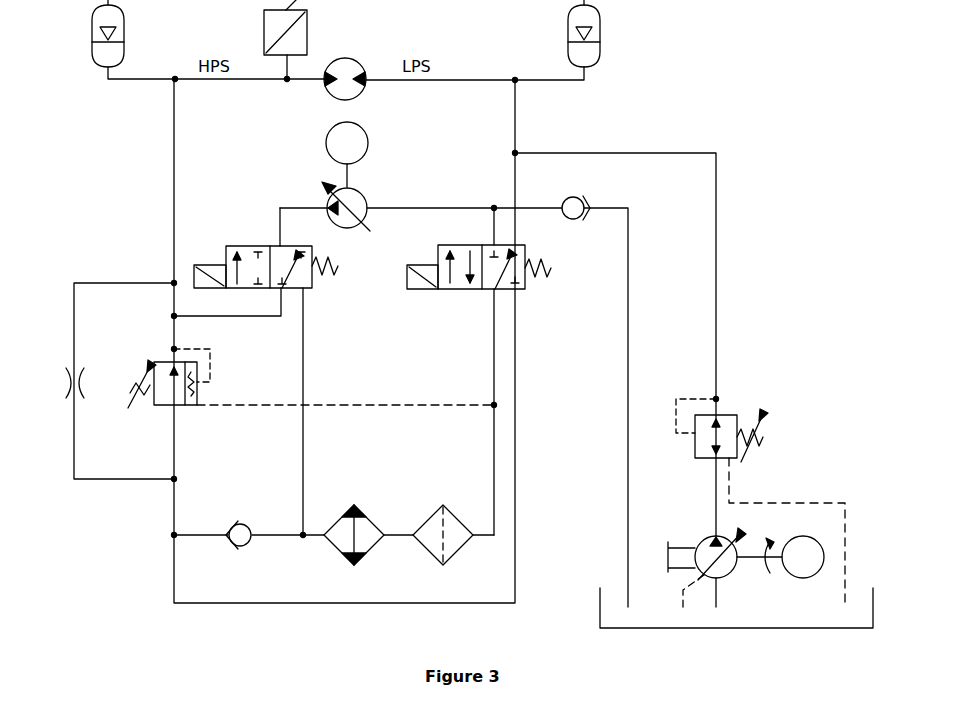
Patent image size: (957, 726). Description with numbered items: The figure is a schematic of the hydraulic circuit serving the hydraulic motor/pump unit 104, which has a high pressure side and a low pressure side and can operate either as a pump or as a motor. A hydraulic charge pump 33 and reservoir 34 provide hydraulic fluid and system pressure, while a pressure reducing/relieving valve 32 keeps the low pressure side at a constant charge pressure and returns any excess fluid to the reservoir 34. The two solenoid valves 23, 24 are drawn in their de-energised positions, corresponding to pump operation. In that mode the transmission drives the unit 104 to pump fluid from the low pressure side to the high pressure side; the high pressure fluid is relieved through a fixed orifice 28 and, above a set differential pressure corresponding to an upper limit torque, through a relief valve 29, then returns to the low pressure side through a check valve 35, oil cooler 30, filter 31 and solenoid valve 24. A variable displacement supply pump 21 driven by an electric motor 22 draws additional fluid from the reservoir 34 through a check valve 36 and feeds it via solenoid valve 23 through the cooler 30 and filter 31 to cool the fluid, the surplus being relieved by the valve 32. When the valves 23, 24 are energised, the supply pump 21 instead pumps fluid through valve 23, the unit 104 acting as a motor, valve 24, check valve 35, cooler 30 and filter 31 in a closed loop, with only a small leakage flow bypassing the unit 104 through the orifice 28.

The hydraulic motor/pump unit 104 is at (346, 58).
The variable displacement supply pump 21 is at (368, 200).
The electric motor 22 is at (369, 140).
The solenoid valve 23 is at (250, 245).
The solenoid valve 24 is at (465, 290).
The fixed orifice 28 is at (67, 375).
The relief valve 29 is at (162, 407).
The oil cooler 30 is at (360, 510).
The filter 31 is at (450, 510).
The pressure reducing/relieving valve 32 is at (733, 414).
The hydraulic charge pump 33 is at (703, 540).
The reservoir 34 is at (790, 628).
The check valve 35 is at (232, 523).
The check valve 36 is at (583, 198).